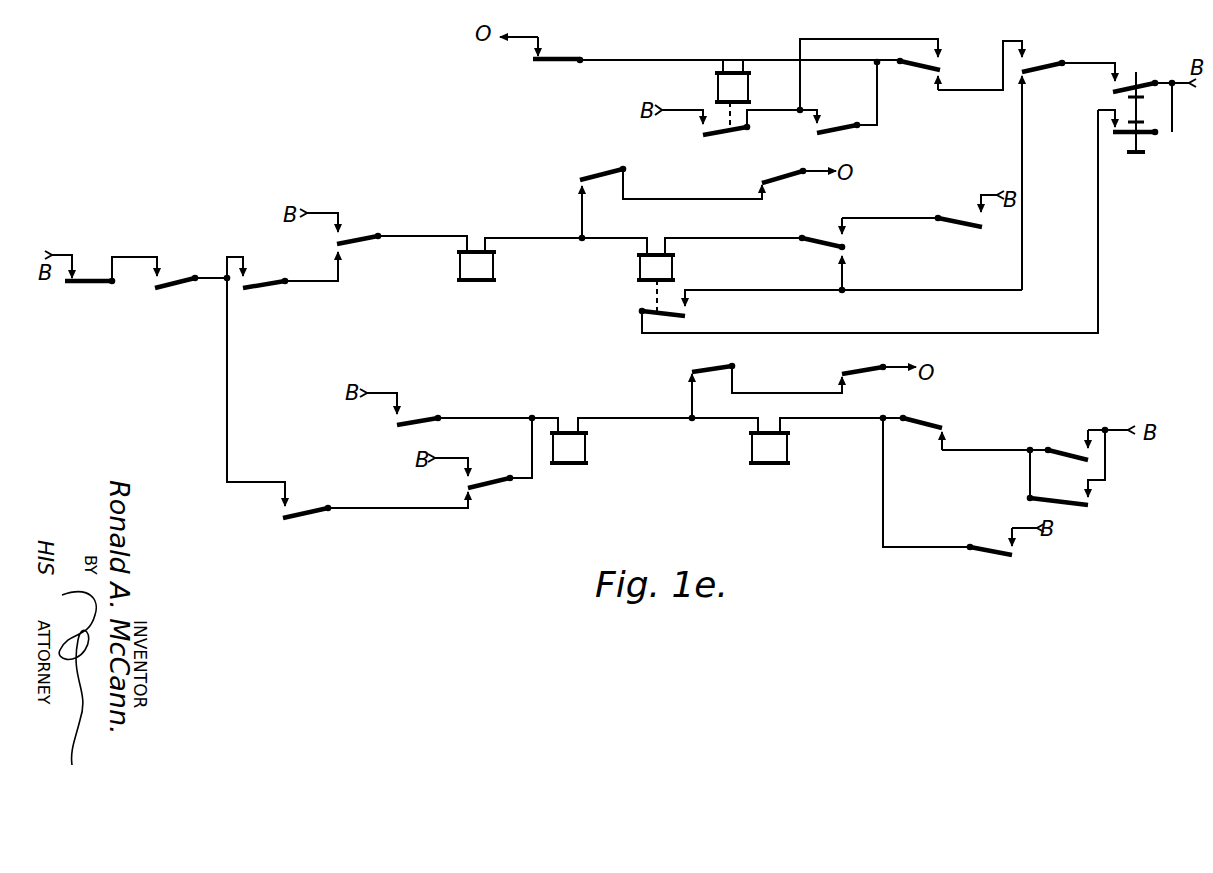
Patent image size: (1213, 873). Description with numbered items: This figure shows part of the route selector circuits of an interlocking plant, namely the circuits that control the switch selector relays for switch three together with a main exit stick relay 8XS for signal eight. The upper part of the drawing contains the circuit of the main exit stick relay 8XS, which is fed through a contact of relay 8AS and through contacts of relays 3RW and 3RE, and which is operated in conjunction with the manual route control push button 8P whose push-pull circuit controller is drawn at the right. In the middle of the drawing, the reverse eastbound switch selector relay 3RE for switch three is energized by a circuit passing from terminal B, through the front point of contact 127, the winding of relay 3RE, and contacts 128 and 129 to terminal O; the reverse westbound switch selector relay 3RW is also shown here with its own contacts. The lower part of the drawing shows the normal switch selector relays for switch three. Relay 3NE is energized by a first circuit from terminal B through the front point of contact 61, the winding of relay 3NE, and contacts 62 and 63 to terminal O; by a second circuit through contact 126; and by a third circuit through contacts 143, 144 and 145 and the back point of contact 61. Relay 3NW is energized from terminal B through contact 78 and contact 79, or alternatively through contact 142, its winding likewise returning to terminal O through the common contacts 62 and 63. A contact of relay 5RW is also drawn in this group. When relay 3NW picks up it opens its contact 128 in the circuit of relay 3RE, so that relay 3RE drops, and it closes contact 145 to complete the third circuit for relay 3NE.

The relay 8AS is at (565, 52).
The main exit stick relay 8XS is at (733, 72).
The switch selector relay 3RW is at (920, 55).
The switch selector relay 3RE is at (840, 108).
The manual route control push button 8P is at (1136, 152).
The contact 6AS- 143 is at (90, 276).
The contact 1NE- 144 is at (180, 276).
The contact 6PBS- 127 is at (368, 230).
The contact 3NW- 128 is at (606, 160).
The contact 3NWK- 129 is at (782, 164).
The switch selector relay 3NE is at (585, 448).
The switch selector relay 3NW is at (787, 448).
The contact 3RW- 62 is at (716, 360).
The contact 3RWK- 63 is at (862, 362).
The contact 6PBS- 126 is at (418, 418).
The contact 3NW- 145 is at (306, 510).
The contact 6Z- 61 is at (495, 484).
The contact 10PBS- 79 is at (930, 410).
The contact 5NW- 78 is at (1070, 428).
The switch selector relay 5RW is at (1080, 508).
The contact 10XS- 142 is at (992, 538).